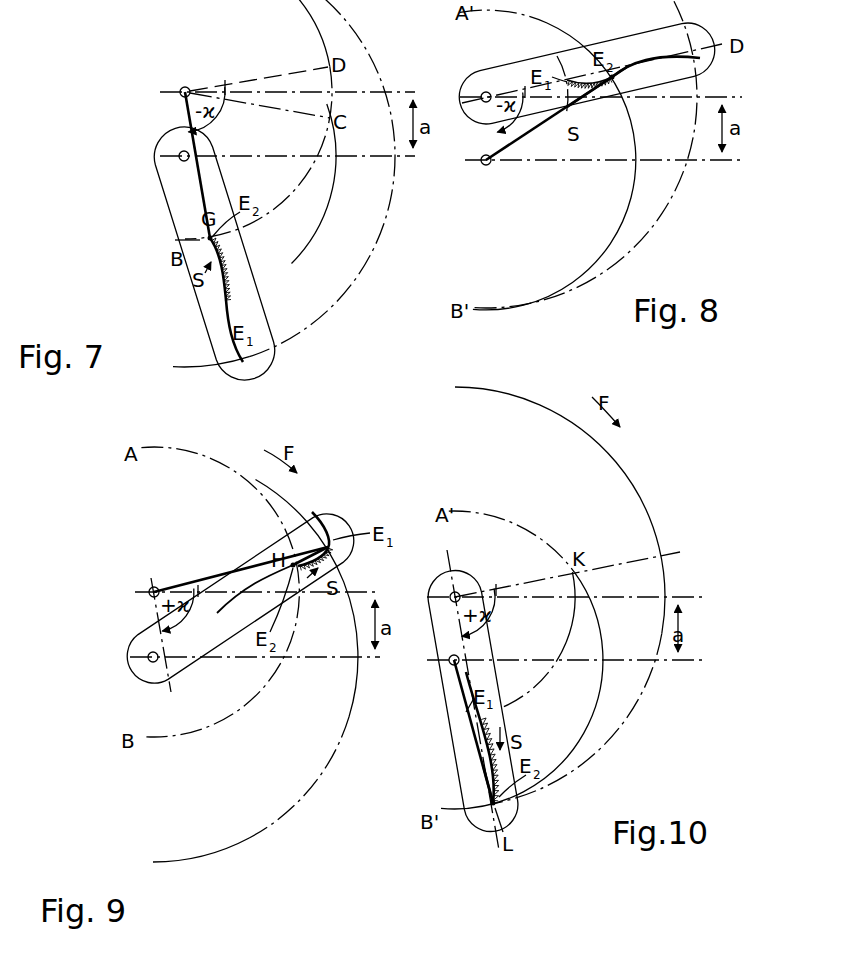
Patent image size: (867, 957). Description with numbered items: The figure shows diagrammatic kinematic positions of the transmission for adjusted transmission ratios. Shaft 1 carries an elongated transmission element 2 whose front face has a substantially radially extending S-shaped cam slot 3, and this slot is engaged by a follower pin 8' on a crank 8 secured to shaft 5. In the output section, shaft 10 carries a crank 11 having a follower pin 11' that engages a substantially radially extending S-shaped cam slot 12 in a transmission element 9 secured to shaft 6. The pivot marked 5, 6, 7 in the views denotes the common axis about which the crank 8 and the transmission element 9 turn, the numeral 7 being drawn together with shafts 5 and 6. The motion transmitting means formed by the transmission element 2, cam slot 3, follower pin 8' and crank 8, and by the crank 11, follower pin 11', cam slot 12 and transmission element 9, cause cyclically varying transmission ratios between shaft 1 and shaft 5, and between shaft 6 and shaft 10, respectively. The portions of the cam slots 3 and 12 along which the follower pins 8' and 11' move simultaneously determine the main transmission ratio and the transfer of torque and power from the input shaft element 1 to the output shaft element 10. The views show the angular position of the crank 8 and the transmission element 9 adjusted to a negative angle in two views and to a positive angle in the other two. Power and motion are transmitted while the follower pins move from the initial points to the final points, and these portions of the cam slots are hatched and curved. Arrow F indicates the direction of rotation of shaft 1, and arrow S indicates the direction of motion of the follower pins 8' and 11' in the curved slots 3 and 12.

In FIG. 7, the shaft 1 is at (177, 161).
In FIG. 9, the shaft 1 is at (146, 655).
In FIG. 7, the transmission element 2 is at (200, 296).
In FIG. 9, the transmission element 2 is at (325, 524).
In FIG. 7, the cam slot 3 is at (226, 340).
In FIG. 9, the cam slot 3 is at (236, 583).
In FIG. 7, the shaft 5 is at (137, 79).
In FIG. 8, the shaft 5 is at (457, 71).
In FIG. 9, the shaft 5 is at (99, 579).
In FIG. 10, the shaft 5 is at (420, 578).
In FIG. 7, the shaft 6 is at (137, 79).
In FIG. 8, the shaft 6 is at (457, 71).
In FIG. 9, the shaft 6 is at (99, 579).
In FIG. 10, the shaft 6 is at (420, 578).
In FIG. 7, the pivot axis 7 is at (181, 89).
In FIG. 8, the pivot axis 7 is at (485, 90).
In FIG. 9, the pivot axis 7 is at (150, 588).
In FIG. 10, the pivot axis 7 is at (452, 593).
In FIG. 7, the crank 8 is at (173, 165).
In FIG. 9, the crank 8 is at (241, 562).
In FIG. 7, the follower pin 8' is at (175, 250).
In FIG. 9, the follower pin 8' is at (311, 596).
In FIG. 8, the transmission element 9 is at (714, 60).
In FIG. 10, the transmission element 9 is at (452, 706).
In FIG. 8, the shaft 10 is at (482, 166).
In FIG. 10, the shaft 10 is at (448, 663).
In FIG. 8, the crank 11 is at (558, 138).
In FIG. 10, the crank 11 is at (453, 731).
In FIG. 8, the follower pin 11' is at (619, 103).
In FIG. 10, the follower pin 11' is at (469, 810).
In FIG. 8, the cam slot 12 is at (640, 55).
In FIG. 10, the cam slot 12 is at (470, 717).